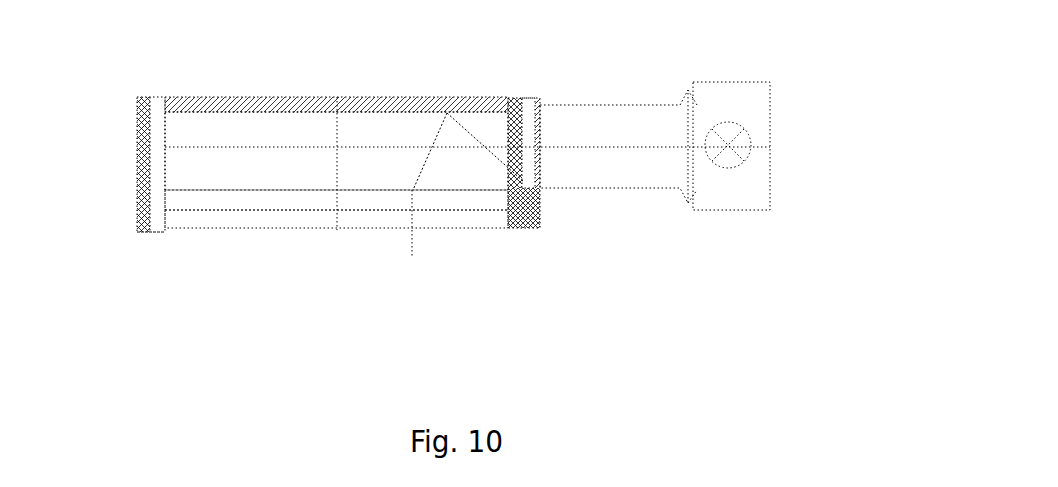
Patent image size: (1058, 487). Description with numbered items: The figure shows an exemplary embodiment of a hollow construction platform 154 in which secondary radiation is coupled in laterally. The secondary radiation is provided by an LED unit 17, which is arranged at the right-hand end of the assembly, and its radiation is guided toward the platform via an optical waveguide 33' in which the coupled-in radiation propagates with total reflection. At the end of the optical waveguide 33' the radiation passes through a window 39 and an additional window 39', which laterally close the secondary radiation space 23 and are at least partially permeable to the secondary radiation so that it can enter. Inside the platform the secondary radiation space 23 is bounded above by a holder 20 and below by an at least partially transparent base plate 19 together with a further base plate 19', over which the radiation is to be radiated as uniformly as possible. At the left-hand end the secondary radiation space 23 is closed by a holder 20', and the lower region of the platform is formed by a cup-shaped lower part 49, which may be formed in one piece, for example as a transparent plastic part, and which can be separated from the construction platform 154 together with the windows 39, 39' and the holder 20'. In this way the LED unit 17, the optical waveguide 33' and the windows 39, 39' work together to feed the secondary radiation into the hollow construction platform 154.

The construction platform 154 is at (115, 86).
The holder 20 is at (336, 69).
The holder 20' is at (183, 214).
The cup-shaped lower part 49 is at (146, 242).
The secondary radiation space 23 is at (208, 183).
The base plate 19 is at (336, 261).
The base plate 19' is at (354, 279).
The window 39 is at (552, 206).
The additional window 39' is at (494, 108).
The optical waveguide 33' is at (618, 194).
The LED unit 17 is at (742, 156).